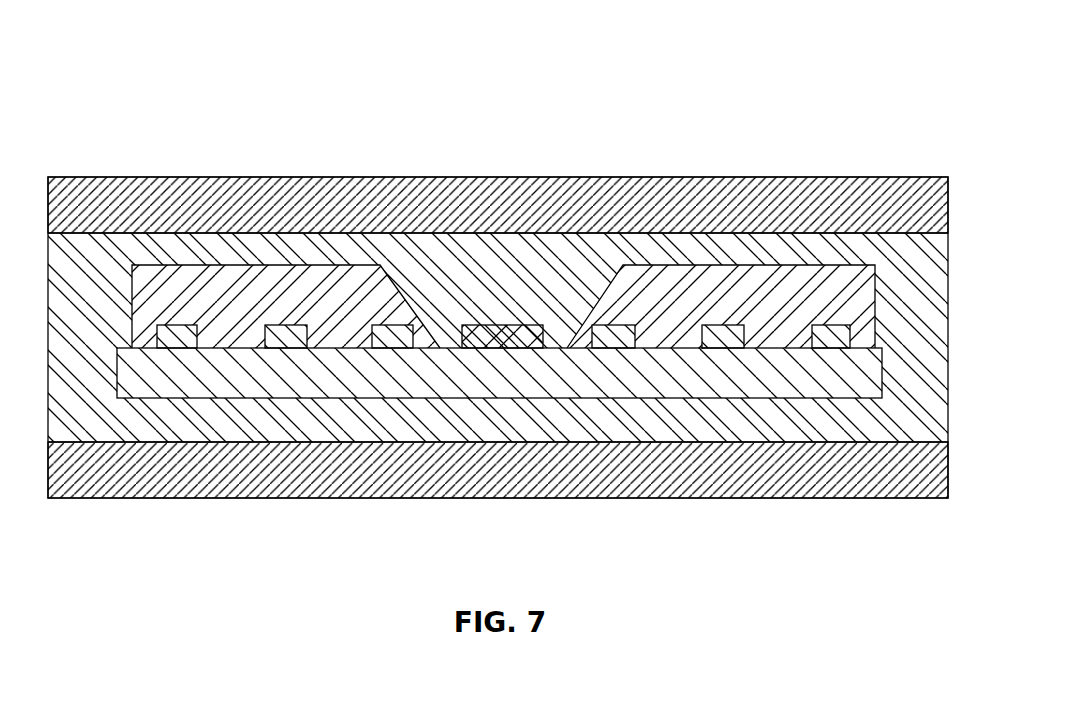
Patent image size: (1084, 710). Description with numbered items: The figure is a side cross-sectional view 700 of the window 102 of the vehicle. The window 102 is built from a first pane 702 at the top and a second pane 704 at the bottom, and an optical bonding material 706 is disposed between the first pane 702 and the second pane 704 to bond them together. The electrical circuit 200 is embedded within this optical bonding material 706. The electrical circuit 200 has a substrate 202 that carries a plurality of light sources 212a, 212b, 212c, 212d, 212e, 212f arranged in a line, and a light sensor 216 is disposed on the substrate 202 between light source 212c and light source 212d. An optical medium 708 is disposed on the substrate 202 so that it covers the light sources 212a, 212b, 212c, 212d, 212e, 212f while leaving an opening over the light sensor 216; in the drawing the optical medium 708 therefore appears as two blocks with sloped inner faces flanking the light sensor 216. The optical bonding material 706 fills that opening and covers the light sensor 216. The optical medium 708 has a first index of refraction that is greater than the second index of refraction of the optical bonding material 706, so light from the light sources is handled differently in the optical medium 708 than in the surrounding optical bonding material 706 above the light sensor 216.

The side cross-sectional view 700 is at (828, 60).
The window 102 is at (866, 173).
The first pane 702 is at (87, 177).
The second pane 704 is at (93, 498).
The optical bonding material 706 is at (116, 286).
The optical medium 708 is at (365, 297).
The electrical circuit 200 is at (881, 340).
The substrate 202 is at (845, 400).
The light sensor 216 is at (516, 347).
The light source 212a is at (168, 327).
The light source 212b is at (283, 348).
The light source 212c is at (387, 348).
The light source 212d is at (605, 347).
The light source 212e is at (723, 347).
The light source 212f is at (829, 347).